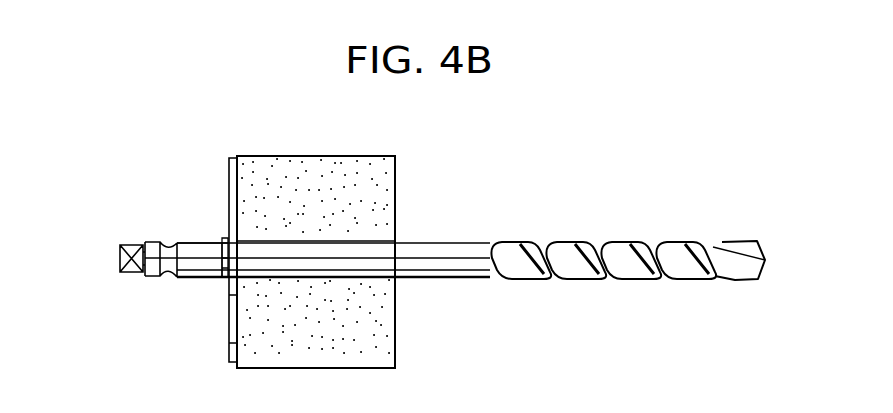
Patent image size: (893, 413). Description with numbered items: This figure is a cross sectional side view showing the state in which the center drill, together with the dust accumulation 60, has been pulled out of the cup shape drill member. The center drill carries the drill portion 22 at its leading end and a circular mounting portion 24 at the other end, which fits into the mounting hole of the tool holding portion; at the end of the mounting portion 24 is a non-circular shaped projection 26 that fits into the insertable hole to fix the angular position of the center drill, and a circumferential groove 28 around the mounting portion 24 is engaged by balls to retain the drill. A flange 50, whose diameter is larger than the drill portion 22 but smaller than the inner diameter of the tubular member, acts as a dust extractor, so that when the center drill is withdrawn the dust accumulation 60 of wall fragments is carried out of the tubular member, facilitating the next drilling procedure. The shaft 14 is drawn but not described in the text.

The shaft 14 is at (442, 270).
The drill portion 22 is at (672, 250).
The mounting portion 24 is at (202, 248).
The non-circular shaped projection 26 is at (135, 250).
The circumferential groove 28 is at (168, 277).
The flange 50 is at (228, 176).
The dust accumulation 60 is at (397, 177).